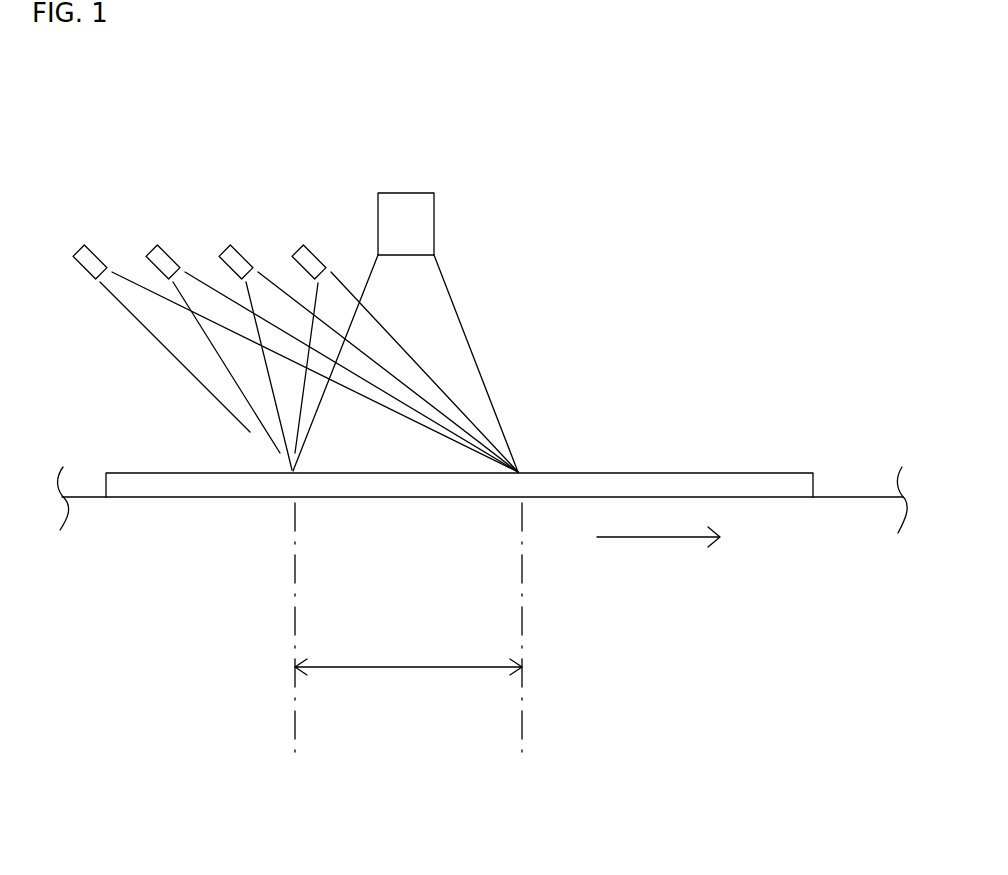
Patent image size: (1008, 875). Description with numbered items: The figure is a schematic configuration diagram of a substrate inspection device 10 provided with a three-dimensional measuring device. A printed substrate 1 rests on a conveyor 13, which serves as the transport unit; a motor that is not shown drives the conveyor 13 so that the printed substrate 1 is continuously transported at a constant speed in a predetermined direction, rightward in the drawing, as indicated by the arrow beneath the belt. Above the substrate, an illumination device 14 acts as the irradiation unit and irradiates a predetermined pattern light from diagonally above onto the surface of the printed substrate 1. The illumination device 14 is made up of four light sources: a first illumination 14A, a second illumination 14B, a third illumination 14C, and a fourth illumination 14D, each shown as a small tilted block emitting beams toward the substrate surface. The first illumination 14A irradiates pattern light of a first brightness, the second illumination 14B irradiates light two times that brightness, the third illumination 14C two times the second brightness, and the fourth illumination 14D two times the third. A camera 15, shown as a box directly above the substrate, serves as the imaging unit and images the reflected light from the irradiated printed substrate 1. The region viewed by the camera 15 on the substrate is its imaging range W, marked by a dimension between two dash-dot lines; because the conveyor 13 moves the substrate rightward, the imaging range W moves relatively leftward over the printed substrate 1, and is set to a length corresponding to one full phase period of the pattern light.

The substrate inspection device 10 is at (767, 195).
The printed substrate 1 is at (700, 472).
The conveyor 13 is at (858, 497).
The illumination device 14 is at (357, 173).
The first illumination 14A is at (78, 248).
The second illumination 14B is at (152, 248).
The third illumination 14C is at (226, 248).
The fourth illumination 14D is at (298, 248).
The camera 15 is at (405, 193).
The imaging range W is at (410, 667).